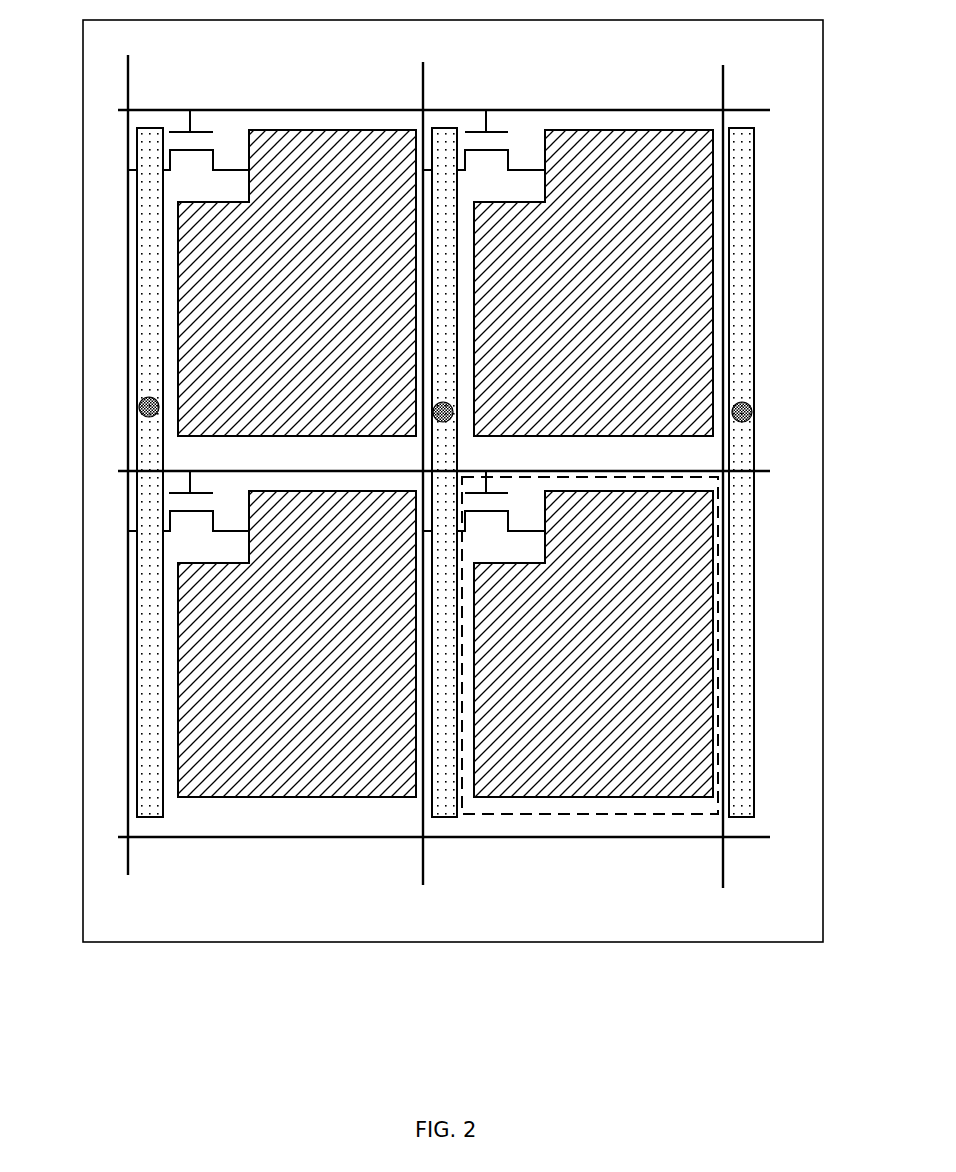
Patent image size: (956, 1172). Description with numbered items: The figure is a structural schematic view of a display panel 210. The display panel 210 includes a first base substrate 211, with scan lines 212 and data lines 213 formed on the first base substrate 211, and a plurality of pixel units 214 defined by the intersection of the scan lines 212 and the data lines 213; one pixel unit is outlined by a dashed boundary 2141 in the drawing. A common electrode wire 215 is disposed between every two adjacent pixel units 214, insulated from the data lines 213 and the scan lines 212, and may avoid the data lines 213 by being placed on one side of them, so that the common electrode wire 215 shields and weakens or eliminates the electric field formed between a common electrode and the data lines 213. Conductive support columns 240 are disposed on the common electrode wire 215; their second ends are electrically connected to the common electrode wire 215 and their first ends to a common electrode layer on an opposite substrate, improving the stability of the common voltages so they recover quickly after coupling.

The display panel 210 is at (650, 1004).
The first base substrate 211 is at (212, 903).
The scan lines 212 is at (255, 837).
The data lines 213 is at (423, 873).
The pixel units 214 is at (547, 813).
The pixel region 2141 is at (620, 797).
The common electrode wire 215 is at (147, 648).
The conductive support columns 240 is at (752, 405).